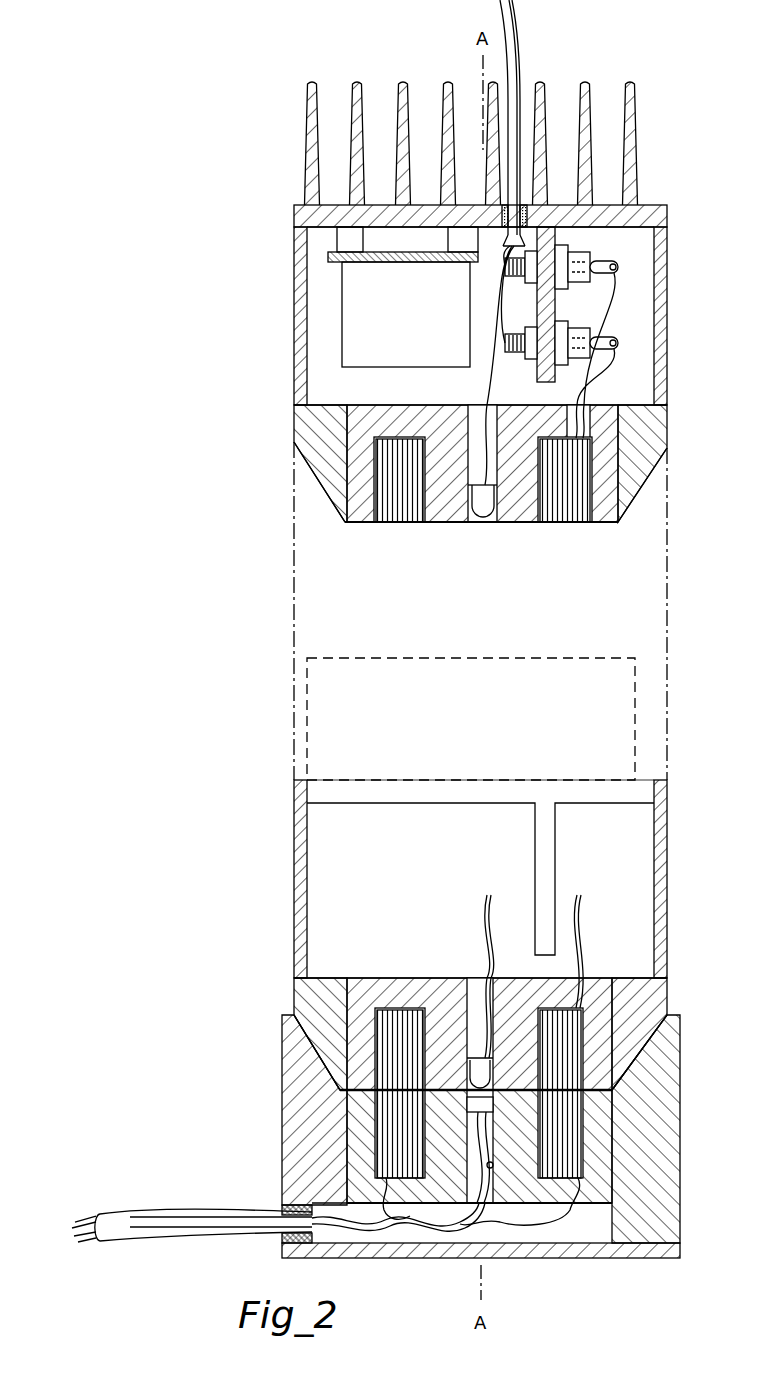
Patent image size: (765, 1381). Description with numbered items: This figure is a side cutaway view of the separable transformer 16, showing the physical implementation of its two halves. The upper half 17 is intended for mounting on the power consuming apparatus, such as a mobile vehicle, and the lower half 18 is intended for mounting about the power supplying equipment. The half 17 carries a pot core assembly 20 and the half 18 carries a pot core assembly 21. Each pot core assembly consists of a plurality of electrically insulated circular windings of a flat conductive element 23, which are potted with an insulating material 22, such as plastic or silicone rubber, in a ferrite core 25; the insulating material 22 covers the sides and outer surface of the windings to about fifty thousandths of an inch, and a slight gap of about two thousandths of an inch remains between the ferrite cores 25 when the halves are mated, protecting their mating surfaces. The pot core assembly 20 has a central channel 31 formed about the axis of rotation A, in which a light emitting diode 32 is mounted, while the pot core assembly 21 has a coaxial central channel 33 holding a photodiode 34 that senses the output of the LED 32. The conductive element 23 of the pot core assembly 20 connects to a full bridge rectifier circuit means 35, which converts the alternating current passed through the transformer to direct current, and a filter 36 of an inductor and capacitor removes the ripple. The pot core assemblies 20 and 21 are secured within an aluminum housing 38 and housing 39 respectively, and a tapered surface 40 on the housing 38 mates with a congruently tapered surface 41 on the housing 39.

The separable transformer 16 is at (215, 1048).
The half 17 is at (288, 413).
The half 18 is at (262, 1150).
The pot core assembly 20 is at (434, 532).
The pot core assembly 21 is at (565, 1226).
The insulating potting material 22 is at (370, 508).
The flat conductive element 23 is at (400, 506).
The ferrite core 25 is at (447, 427).
The central channel 31 is at (476, 521).
The light emitting diode 32 is at (490, 516).
The central channel 33 is at (492, 1168).
The photodiode 34 is at (490, 1109).
The full bridge rectifier circuit means 35 is at (587, 291).
The filter 36 is at (420, 326).
The housing 38 is at (313, 455).
The housing 39 is at (290, 1113).
The tapered surface 40 is at (327, 495).
The tapered surface 41 is at (312, 1042).